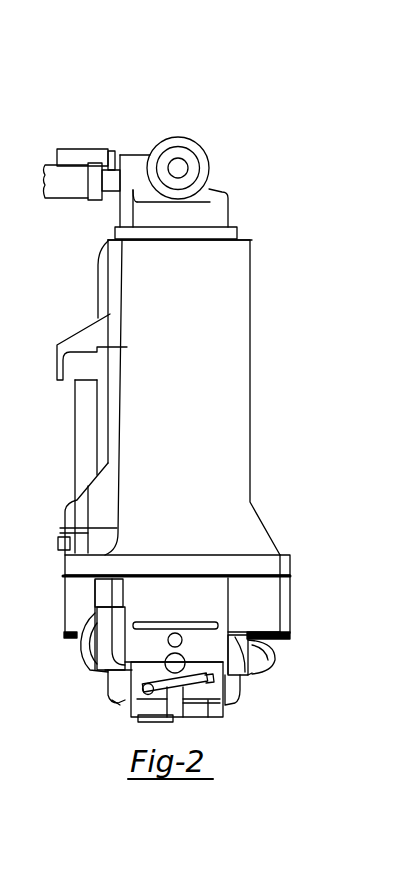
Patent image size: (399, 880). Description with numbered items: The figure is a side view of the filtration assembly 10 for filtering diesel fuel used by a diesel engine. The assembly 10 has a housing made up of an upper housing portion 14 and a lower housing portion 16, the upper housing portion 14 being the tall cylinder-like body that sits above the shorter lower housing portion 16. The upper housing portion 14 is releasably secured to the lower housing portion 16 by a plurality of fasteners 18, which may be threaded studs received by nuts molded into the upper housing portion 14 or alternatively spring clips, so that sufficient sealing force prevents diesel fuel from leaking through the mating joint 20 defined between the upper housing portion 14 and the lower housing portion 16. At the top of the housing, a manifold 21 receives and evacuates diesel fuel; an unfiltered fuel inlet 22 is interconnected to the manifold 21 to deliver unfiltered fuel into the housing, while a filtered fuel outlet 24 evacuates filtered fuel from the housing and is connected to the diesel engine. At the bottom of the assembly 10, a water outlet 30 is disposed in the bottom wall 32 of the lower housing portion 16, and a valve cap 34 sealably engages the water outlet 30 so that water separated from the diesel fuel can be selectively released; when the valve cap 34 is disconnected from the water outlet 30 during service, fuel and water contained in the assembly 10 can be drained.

The filtration assembly 10 is at (298, 73).
The upper housing portion 14 is at (250, 360).
The lower housing portion 16 is at (290, 610).
The fasteners 18 is at (76, 648).
The mating joint 20 is at (292, 577).
The manifold 21 is at (198, 136).
The unfiltered fuel inlet 22 is at (121, 152).
The filtered fuel outlet 24 is at (95, 200).
The water outlet 30 is at (112, 702).
The bottom wall 32 is at (252, 674).
The valve cap 34 is at (202, 717).